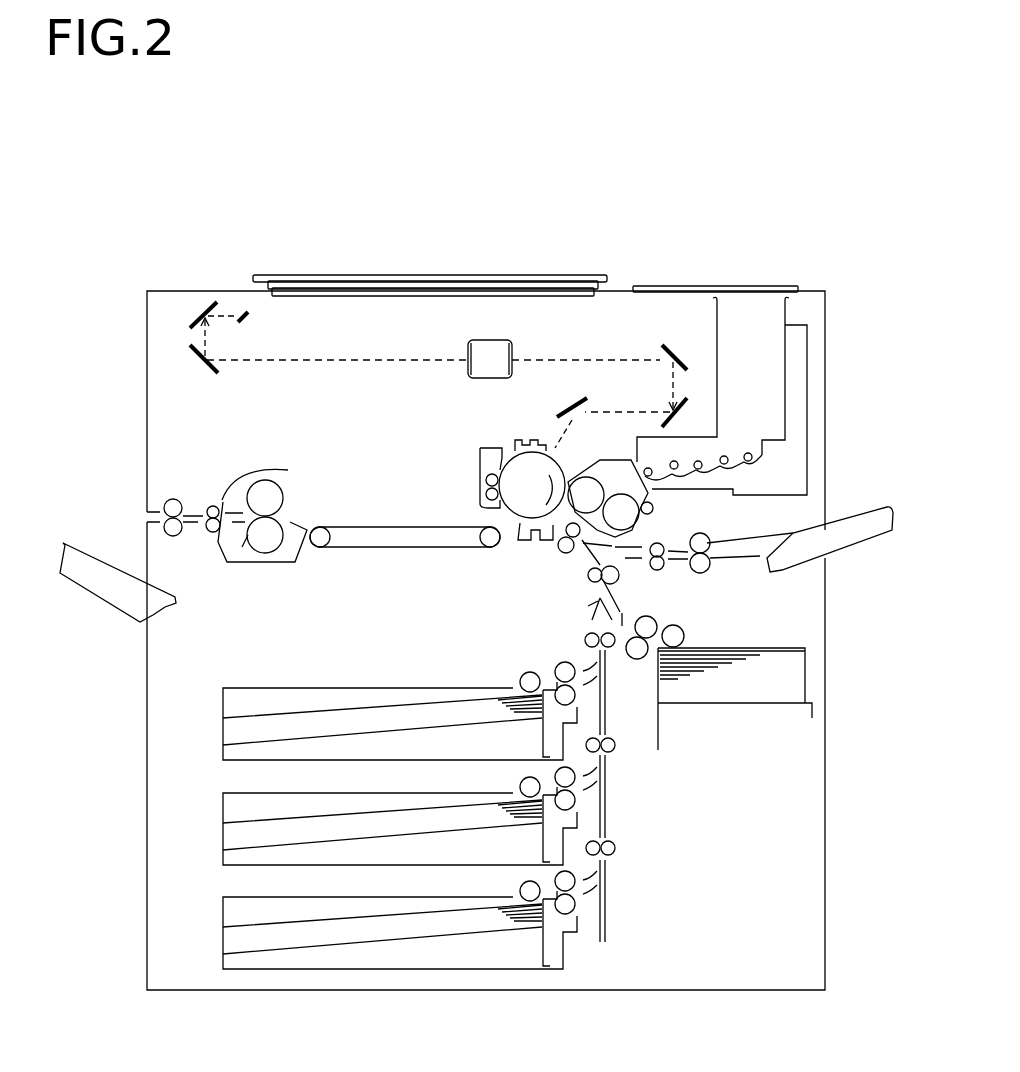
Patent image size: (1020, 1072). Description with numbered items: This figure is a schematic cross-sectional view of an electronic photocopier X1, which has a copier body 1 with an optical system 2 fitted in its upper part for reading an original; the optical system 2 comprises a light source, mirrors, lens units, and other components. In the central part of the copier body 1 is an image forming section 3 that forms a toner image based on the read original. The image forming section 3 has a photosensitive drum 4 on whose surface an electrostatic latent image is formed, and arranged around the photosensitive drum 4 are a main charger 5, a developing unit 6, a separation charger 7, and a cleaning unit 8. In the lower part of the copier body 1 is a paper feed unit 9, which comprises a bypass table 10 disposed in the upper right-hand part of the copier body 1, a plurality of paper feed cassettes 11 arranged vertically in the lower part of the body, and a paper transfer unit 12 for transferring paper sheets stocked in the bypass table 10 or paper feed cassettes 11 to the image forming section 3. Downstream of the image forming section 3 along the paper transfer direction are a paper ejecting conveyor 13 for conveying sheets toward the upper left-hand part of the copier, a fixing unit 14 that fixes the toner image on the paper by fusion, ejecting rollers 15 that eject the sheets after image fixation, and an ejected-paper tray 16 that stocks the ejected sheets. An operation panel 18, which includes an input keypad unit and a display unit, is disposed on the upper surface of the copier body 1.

The copier body 1 is at (812, 278).
The electronic photocopier X1 is at (640, 268).
The operation panel 18 is at (760, 286).
The optical system 2 is at (272, 335).
The image forming section 3 is at (452, 440).
The photosensitive drum 4 is at (510, 452).
The main charger 5 is at (524, 437).
The developing unit 6 is at (607, 470).
The separation charger 7 is at (536, 545).
The cleaning unit 8 is at (478, 482).
The paper feed unit 9 is at (532, 645).
The bypass table 10 is at (858, 520).
The paper feed cassettes 11 is at (223, 750).
The paper transfer unit 12 is at (655, 605).
The paper ejecting conveyor 13 is at (378, 548).
The fixing unit 14 is at (268, 563).
The ejecting rollers 15 is at (175, 500).
The ejected-paper tray 16 is at (92, 560).